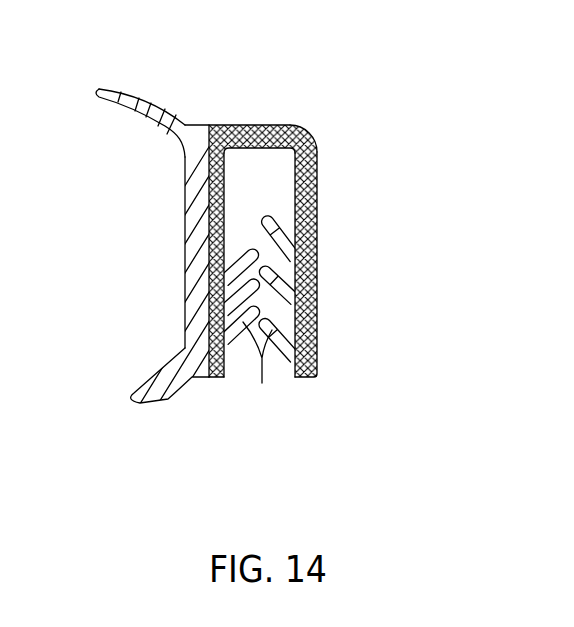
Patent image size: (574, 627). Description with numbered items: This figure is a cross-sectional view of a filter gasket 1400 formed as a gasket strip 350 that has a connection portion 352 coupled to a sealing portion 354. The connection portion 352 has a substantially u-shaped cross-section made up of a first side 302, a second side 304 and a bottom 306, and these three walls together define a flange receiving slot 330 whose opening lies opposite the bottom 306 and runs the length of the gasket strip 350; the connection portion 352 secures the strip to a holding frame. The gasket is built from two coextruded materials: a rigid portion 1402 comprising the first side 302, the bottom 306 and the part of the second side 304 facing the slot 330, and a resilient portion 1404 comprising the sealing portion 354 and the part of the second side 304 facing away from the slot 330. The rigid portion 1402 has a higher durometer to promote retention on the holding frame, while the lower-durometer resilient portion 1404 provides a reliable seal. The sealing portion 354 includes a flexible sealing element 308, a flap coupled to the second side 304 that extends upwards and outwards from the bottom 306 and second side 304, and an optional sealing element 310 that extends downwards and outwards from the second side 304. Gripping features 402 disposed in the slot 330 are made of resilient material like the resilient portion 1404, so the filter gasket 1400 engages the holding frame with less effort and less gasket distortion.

The filter gasket 1400 is at (246, 56).
The gasket strip 350 is at (337, 123).
The connection portion 352 is at (247, 104).
The sealing portion 354 is at (130, 66).
The rigid portion 1402 is at (292, 125).
The first side 302 is at (318, 205).
The second side 304 is at (184, 213).
The bottom 306 is at (224, 126).
The sealing element 308 is at (141, 95).
The sealing element 310 is at (171, 398).
The flange receiving slot 330 is at (245, 372).
The gripping features 402 is at (262, 383).
The resilient portion 1404 is at (184, 293).